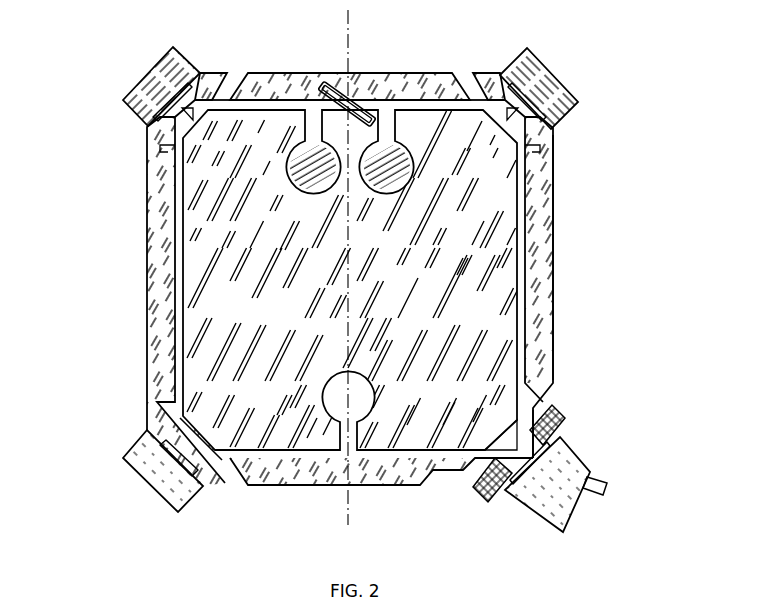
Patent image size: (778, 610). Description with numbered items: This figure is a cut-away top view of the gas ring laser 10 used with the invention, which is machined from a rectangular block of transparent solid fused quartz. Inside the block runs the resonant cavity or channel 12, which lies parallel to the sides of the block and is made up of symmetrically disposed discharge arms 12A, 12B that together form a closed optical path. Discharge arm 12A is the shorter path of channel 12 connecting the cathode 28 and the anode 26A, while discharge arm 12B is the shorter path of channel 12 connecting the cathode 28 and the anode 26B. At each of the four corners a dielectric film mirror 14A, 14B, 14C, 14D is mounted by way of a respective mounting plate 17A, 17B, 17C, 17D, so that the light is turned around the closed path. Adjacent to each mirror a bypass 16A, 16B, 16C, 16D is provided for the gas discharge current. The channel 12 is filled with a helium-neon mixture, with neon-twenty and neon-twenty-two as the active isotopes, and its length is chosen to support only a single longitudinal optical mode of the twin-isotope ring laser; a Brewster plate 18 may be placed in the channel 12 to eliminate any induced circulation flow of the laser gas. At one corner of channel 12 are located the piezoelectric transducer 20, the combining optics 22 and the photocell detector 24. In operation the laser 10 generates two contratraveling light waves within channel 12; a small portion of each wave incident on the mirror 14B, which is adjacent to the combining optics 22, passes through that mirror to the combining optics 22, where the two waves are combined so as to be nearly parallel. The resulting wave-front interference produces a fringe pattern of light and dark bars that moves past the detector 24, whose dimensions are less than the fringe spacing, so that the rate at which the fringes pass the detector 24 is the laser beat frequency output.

The laser 10 is at (424, 293).
The resonant cavity or channel 12 is at (292, 453).
The discharge arm 12A is at (176, 202).
The discharge arm 12B is at (523, 278).
The dielectric film mirror 14A is at (626, 108).
The dielectric film mirror 14B is at (628, 365).
The dielectric film mirror 14C is at (81, 403).
The dielectric film mirror 14D is at (150, 120).
The bypass 16A is at (553, 142).
The bypass 16B is at (626, 318).
The bypass 16C is at (86, 369).
The bypass 16D is at (158, 150).
The mounting plate 17A is at (557, 82).
The mounting plate 17B is at (522, 503).
The mounting plate 17C is at (125, 471).
The mounting plate 17D is at (150, 72).
The Brewster plate 18 is at (351, 100).
The piezoelectric transducer 20 is at (451, 515).
The combining optics 22 is at (628, 399).
The photocell detector 24 is at (636, 443).
The anode 26A is at (323, 187).
The anode 26B is at (397, 185).
The cathode 28 is at (555, 297).